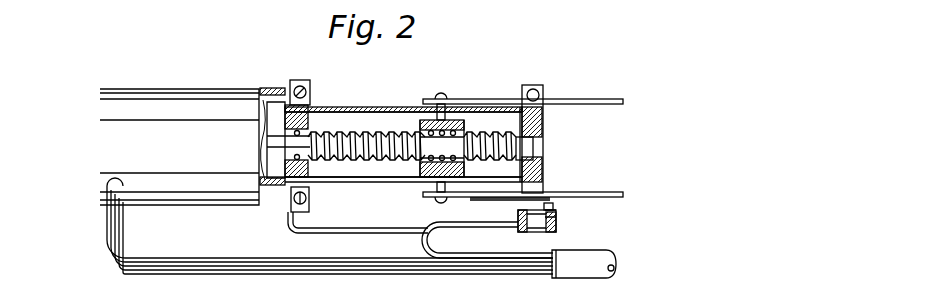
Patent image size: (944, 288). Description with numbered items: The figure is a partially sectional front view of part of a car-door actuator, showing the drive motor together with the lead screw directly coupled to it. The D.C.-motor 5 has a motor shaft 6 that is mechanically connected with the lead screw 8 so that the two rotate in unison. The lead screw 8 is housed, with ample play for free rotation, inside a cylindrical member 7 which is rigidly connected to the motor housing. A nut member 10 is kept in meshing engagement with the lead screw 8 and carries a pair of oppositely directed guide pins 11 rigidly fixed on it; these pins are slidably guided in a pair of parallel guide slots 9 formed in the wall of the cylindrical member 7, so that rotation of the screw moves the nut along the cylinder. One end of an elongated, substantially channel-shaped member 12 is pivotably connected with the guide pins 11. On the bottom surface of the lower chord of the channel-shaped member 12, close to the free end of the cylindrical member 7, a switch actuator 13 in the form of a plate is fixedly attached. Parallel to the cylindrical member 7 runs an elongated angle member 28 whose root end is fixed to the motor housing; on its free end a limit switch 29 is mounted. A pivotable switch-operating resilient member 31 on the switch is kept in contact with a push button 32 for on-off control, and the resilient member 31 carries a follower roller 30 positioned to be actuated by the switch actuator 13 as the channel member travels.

The D.C.-motor 5 is at (183, 97).
The motor shaft 6 is at (268, 141).
The cylindrical member 7 is at (320, 108).
The lead screw 8 is at (368, 140).
The guide slots 9 is at (355, 108).
The nut member 10 is at (407, 107).
The guide pins 11 is at (447, 102).
The channel-shaped member 12 is at (607, 191).
The switch actuator 13 is at (478, 198).
The angle member 28 is at (363, 232).
The limit switch 29 is at (548, 232).
The follower roller 30 is at (555, 205).
The switch-operating resilient member 31 is at (528, 217).
The push button 32 is at (557, 221).